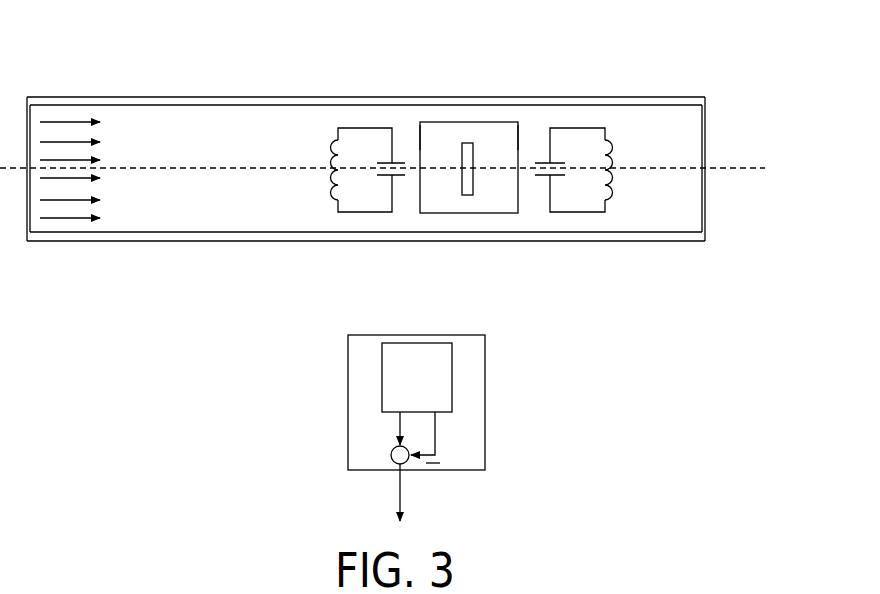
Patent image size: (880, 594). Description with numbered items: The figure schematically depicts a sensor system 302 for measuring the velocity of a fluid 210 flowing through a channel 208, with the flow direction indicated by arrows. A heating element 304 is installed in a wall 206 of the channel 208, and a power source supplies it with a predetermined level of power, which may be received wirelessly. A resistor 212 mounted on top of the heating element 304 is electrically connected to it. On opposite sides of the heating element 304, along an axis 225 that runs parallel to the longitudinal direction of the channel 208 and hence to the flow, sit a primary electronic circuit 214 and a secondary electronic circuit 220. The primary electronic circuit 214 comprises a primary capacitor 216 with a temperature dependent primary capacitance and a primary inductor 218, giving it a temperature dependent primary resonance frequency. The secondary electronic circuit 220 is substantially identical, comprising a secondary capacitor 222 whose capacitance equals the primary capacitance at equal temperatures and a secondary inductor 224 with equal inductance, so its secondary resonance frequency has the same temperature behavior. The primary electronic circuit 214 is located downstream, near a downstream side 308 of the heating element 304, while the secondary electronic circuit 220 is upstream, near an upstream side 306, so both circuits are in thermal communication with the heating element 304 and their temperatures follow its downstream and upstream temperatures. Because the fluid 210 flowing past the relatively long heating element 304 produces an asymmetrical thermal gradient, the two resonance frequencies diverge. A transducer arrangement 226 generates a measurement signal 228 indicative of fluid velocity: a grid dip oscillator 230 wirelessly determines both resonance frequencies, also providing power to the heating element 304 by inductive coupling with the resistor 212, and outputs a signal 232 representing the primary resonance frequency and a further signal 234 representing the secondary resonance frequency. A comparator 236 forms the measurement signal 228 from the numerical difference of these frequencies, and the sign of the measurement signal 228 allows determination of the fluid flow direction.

The sensor system 302 is at (170, 48).
The channel 208 is at (242, 97).
The wall 206 is at (232, 241).
The fluid 210 is at (204, 147).
The axis 225 is at (750, 168).
The secondary electronic circuit 220 is at (363, 212).
The secondary inductor 224 is at (330, 155).
The secondary capacitor 222 is at (400, 178).
The heating element 304 is at (473, 205).
The resistor 212 is at (466, 143).
The upstream side 306 is at (421, 137).
The downstream side 308 is at (530, 138).
The primary electronic circuit 214 is at (577, 212).
The primary capacitor 216 is at (541, 178).
The primary inductor 218 is at (613, 150).
The transducer arrangement 226 is at (485, 397).
The grid dip oscillator 230 is at (436, 388).
The signal 232 is at (398, 420).
The further signal 234 is at (437, 432).
The comparator 236 is at (391, 452).
The measurement signal 228 is at (398, 490).